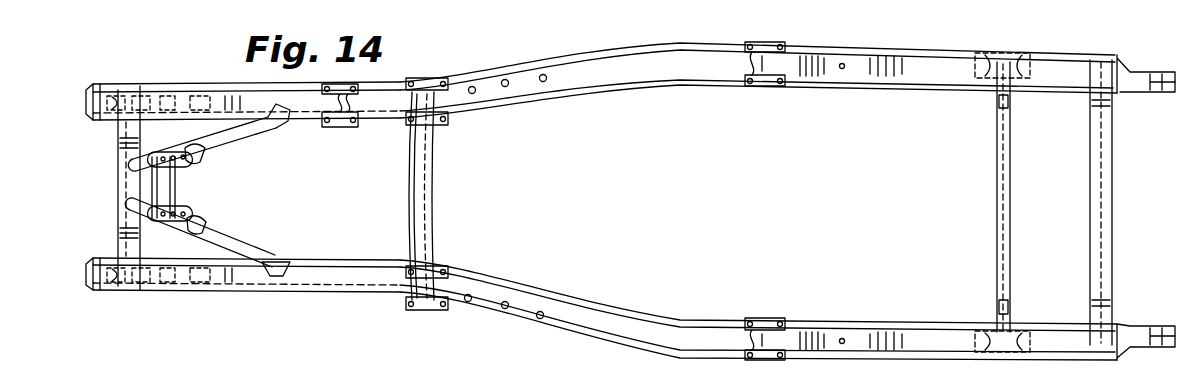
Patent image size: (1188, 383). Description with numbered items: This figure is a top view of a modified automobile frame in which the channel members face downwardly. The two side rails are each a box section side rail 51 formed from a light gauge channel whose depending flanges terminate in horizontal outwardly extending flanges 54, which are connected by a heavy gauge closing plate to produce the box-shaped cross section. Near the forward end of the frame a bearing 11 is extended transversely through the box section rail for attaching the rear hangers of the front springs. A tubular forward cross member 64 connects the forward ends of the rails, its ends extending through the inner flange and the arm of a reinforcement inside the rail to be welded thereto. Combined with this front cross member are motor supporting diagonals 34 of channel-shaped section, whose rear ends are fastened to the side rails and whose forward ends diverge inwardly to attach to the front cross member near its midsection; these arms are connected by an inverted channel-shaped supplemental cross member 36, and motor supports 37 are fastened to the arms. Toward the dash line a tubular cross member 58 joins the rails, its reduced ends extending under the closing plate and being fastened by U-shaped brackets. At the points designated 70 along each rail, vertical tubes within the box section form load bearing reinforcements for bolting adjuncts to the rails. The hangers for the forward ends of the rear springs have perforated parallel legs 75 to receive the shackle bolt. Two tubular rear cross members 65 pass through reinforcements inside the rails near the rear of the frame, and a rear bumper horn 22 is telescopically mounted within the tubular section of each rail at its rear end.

The bearing 11 is at (328, 291).
The rear bumper horn 22 is at (1126, 332).
The motor supporting diagonals 34 is at (225, 143).
The supplemental cross member 36 is at (178, 188).
The motor supports 37 is at (199, 223).
The box section side rail 51 is at (660, 65).
The horizontal outwardly extending flanges 54 is at (587, 308).
The cross member 58 is at (429, 200).
The forward cross member 64 is at (117, 201).
The rear cross members 65 is at (1011, 192).
The load bearing reinforcement points 70 is at (543, 82).
The parallel legs 75 is at (342, 128).